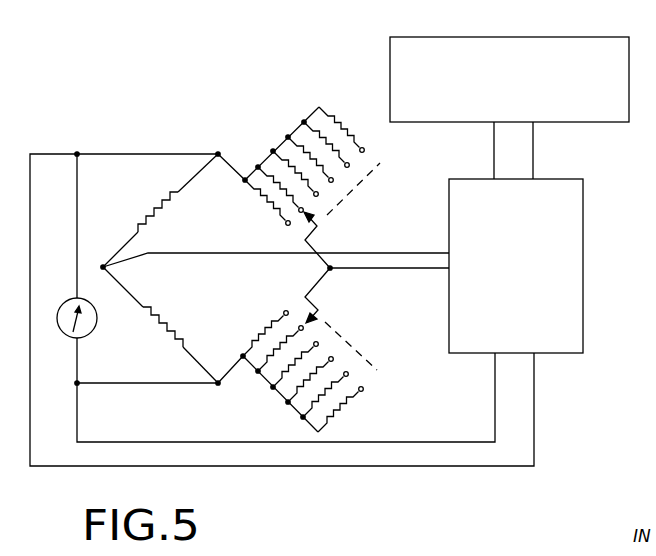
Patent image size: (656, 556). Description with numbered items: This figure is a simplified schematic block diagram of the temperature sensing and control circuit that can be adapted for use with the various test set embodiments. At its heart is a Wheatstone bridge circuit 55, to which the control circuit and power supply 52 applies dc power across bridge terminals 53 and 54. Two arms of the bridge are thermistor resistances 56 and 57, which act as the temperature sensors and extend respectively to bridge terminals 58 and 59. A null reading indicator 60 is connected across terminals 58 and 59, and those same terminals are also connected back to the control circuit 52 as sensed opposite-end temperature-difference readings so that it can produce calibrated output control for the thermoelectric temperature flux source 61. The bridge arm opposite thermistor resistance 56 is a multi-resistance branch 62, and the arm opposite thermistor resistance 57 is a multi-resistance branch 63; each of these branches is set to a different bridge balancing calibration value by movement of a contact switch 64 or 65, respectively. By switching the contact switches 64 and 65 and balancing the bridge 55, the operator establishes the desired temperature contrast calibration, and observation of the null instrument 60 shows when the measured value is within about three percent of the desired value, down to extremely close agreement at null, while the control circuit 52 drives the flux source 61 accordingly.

The control circuit and power supply 52 is at (583, 288).
The bridge terminal 53 is at (330, 268).
The bridge terminal 54 is at (103, 267).
The Wheatstone bridge circuit 55 is at (191, 252).
The thermistor resistance 56 is at (150, 218).
The thermistor resistance 57 is at (173, 337).
The bridge terminal 58 is at (218, 154).
The bridge terminal 59 is at (217, 384).
The null reading indicator 60 is at (97, 320).
The thermoelectric temperature flux source 61 is at (598, 122).
The multi-resistance branch 62 is at (352, 404).
The multi-resistance branch 63 is at (338, 113).
The contact switch 64 is at (309, 319).
The contact switch 65 is at (309, 215).